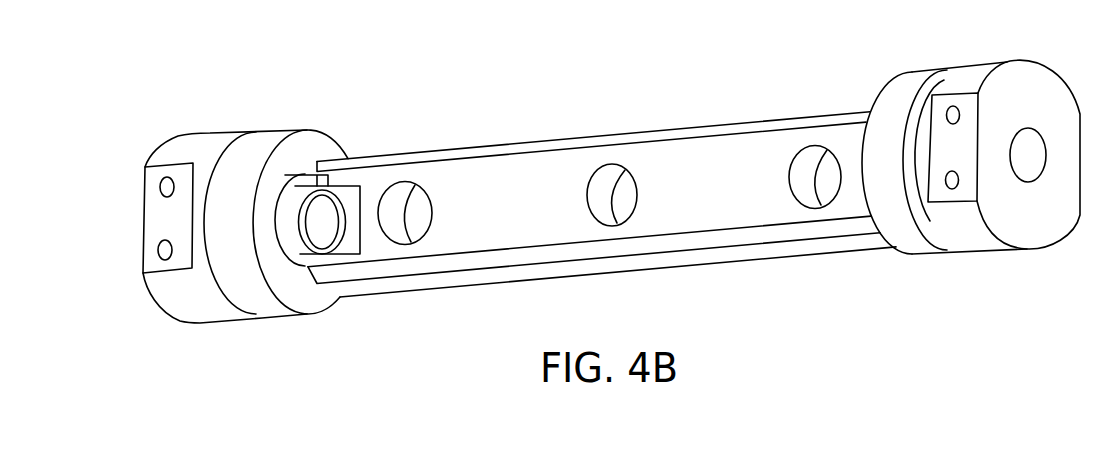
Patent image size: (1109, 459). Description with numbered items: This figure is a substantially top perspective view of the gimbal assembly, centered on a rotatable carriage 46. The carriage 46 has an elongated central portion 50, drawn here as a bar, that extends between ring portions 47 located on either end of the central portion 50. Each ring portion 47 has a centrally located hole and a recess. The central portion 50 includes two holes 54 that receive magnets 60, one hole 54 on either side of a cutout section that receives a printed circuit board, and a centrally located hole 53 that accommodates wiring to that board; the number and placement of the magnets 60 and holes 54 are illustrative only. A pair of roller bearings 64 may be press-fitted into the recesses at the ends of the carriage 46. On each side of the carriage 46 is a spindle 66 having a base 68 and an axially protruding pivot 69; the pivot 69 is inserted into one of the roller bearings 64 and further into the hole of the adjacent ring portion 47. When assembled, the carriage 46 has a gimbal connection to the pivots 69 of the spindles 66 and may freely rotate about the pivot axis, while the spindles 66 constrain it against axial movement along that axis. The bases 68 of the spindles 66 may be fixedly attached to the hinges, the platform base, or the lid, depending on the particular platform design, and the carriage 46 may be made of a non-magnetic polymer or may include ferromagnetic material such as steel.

The rotatable carriage 46 is at (750, 285).
The ring portions 47 is at (265, 143).
The central portion 50 is at (552, 238).
The centrally located hole 53 is at (594, 197).
The holes 54 is at (400, 190).
The magnets 60 is at (421, 213).
The roller bearings 64 is at (920, 145).
The spindle 66 is at (187, 300).
The base 68 is at (208, 160).
The axially protruding pivot 69 is at (298, 247).